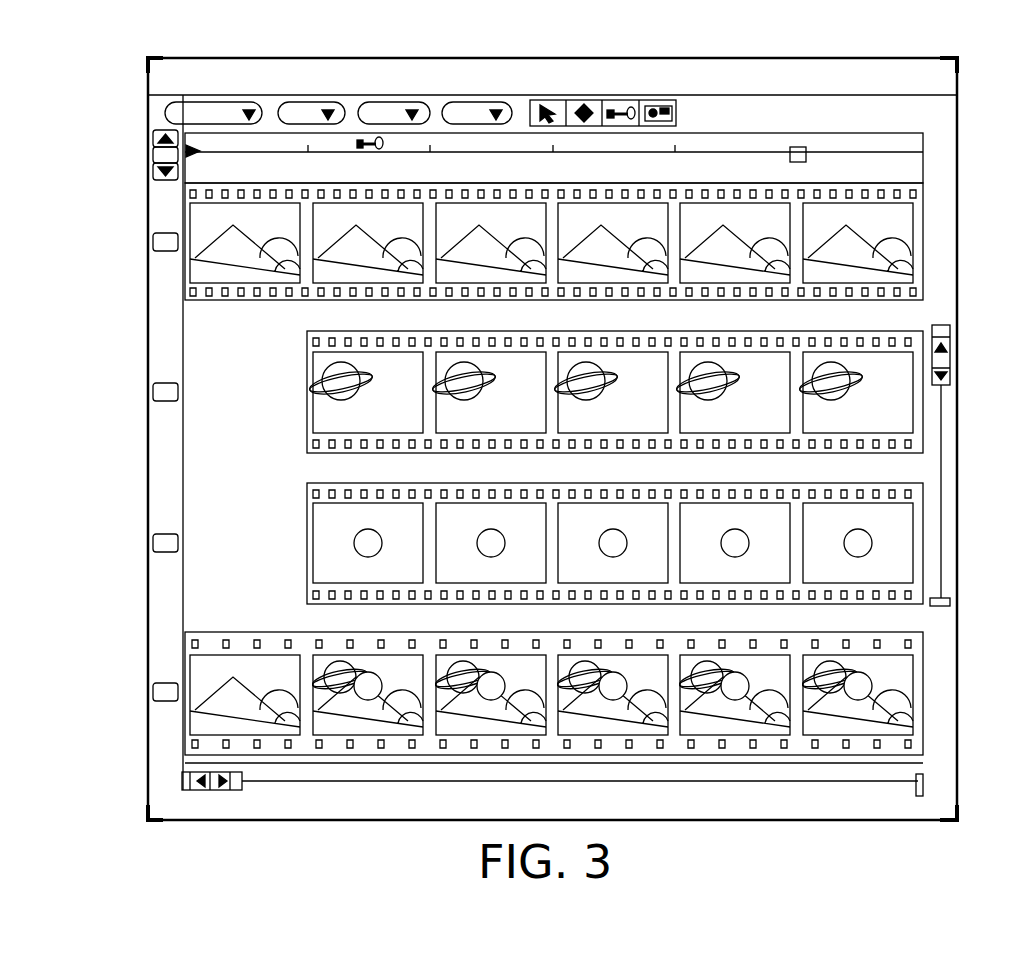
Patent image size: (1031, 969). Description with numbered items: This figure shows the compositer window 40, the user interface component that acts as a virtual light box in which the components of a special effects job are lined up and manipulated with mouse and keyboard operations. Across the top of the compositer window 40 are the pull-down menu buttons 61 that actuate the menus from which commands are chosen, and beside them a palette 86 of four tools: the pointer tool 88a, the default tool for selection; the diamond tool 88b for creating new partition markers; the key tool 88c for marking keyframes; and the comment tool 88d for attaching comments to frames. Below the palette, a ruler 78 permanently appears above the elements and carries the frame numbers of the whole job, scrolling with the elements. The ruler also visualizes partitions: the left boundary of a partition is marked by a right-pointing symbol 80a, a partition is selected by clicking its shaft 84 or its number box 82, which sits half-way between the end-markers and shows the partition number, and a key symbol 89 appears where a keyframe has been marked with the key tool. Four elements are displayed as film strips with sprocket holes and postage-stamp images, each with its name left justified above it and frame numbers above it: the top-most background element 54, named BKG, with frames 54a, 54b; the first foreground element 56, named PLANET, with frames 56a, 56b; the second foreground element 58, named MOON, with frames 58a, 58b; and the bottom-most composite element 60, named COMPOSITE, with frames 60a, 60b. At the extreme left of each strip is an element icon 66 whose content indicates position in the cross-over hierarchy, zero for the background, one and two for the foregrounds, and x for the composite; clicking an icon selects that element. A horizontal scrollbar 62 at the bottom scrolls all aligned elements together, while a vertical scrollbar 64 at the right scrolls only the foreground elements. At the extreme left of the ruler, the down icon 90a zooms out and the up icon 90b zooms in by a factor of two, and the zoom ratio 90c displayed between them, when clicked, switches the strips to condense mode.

The compositer window 40 is at (880, 58).
The pull-down menu buttons 61 is at (393, 104).
The palette 86 is at (630, 100).
The pointer tool 88a is at (540, 128).
The diamond tool 88b is at (593, 128).
The key tool 88c is at (636, 128).
The comment tool 88d is at (675, 116).
The ruler 78 is at (602, 146).
The shaft 84 is at (762, 150).
The right-pointing symbol 80a is at (195, 150).
The key symbol 89 is at (372, 148).
The number box 82 is at (806, 158).
The background element 54 is at (554, 259).
The frame of background element 54a is at (265, 222).
The frame of background element 54b is at (405, 222).
The first foreground element 56 is at (555, 380).
The frame of first foreground element 56a is at (378, 362).
The frame of first foreground element 56b is at (492, 362).
The second foreground element 58 is at (555, 532).
The frame of second foreground element 58a is at (380, 512).
The frame of second foreground element 58b is at (490, 512).
The composite element 60 is at (554, 696).
The frame of composite element 60a is at (272, 730).
The frame of composite element 60b is at (365, 730).
The horizontal scrollbar 62 is at (240, 792).
The vertical scrollbar 64 is at (950, 385).
The element icon 66 is at (148, 255).
The down icon 90a is at (152, 172).
The up icon 90b is at (152, 138).
The zoom ratio 90c is at (152, 156).